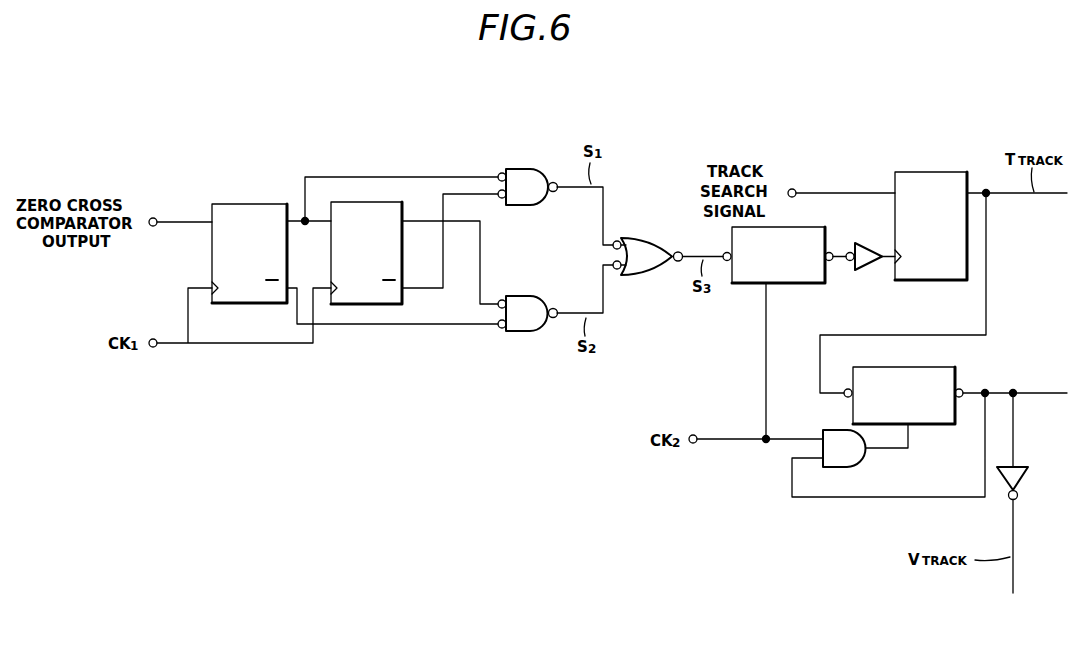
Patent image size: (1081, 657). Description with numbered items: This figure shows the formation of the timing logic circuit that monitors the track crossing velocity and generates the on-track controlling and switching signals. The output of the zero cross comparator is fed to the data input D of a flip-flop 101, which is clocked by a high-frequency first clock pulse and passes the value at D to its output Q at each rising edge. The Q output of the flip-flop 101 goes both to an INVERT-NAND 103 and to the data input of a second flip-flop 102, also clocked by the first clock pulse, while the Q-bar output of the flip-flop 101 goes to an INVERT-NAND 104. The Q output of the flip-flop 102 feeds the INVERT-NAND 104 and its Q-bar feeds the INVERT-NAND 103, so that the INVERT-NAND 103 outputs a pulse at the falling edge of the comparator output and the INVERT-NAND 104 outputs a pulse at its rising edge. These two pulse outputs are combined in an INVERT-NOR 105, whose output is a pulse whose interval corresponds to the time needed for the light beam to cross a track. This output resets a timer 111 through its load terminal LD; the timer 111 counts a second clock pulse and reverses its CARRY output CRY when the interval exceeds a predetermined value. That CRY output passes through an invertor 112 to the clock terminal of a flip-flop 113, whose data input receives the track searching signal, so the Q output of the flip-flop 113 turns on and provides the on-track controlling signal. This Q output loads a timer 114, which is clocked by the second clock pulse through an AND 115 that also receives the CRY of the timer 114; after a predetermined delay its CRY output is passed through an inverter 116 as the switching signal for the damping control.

The flip-flop 101 is at (245, 204).
The flip-flop 102 is at (362, 202).
The INVERT-NAND 103 is at (528, 169).
The INVERT-NAND 104 is at (528, 331).
The INVERT-NOR 105 is at (640, 277).
The timer 111 is at (748, 285).
The invertor 112 is at (867, 272).
The flip-flop 113 is at (927, 172).
The timer 114 is at (880, 367).
The AND 115 is at (852, 467).
The inverter 116 is at (1023, 480).